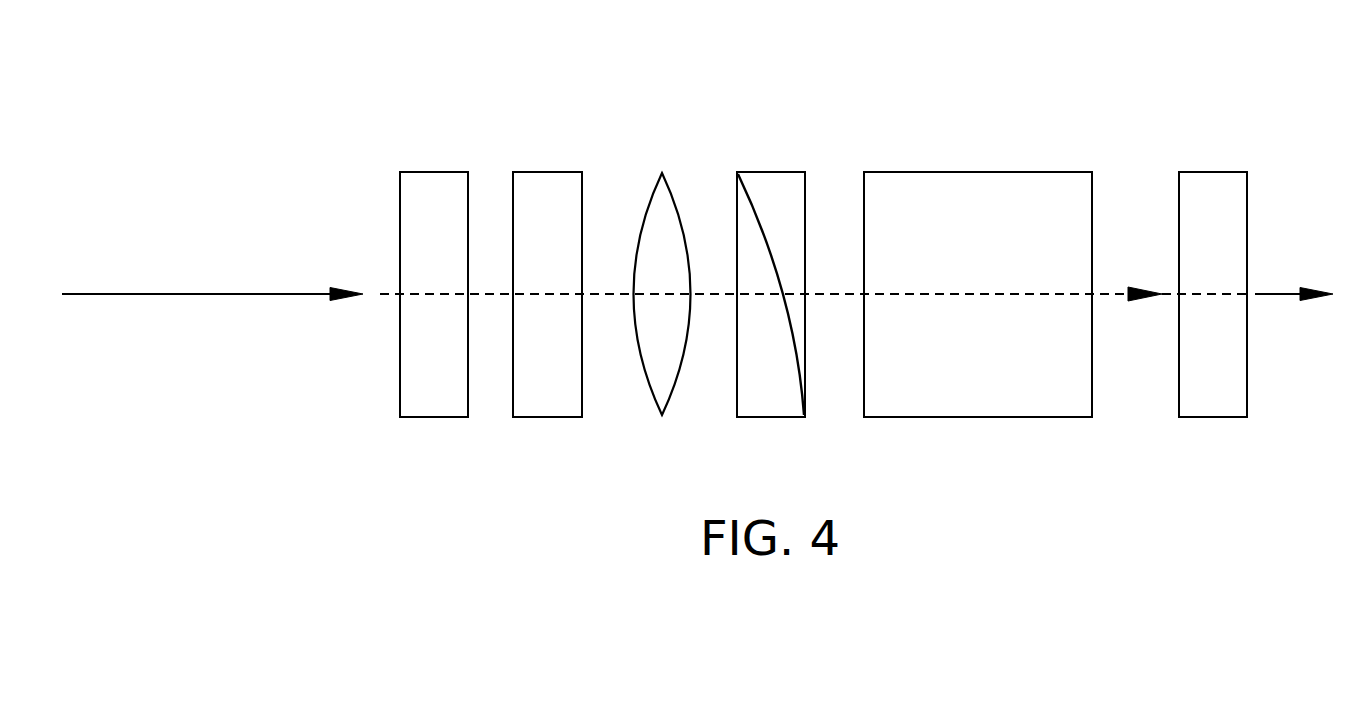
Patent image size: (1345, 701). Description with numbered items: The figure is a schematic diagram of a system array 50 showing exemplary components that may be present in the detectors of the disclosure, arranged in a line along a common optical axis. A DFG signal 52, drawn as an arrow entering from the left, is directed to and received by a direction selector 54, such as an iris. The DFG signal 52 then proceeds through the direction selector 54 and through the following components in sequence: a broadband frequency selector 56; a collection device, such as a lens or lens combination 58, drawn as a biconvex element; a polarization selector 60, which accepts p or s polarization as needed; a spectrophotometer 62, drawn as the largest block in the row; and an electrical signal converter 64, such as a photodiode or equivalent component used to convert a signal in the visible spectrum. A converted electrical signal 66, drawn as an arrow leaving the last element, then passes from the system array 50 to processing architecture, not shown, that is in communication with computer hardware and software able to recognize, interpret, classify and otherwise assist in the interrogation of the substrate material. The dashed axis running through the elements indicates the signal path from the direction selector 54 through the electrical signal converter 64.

The system array 50 is at (770, 48).
The DFG signal 52 is at (179, 294).
The direction selector 54 is at (432, 172).
The broadband frequency selector 56 is at (542, 172).
The lens or lens combination 58 is at (651, 187).
The polarization selector 60 is at (772, 172).
The spectrophotometer 62 is at (950, 172).
The electrical signal converter 64 is at (1208, 172).
The converted electrical signal 66 is at (1280, 294).